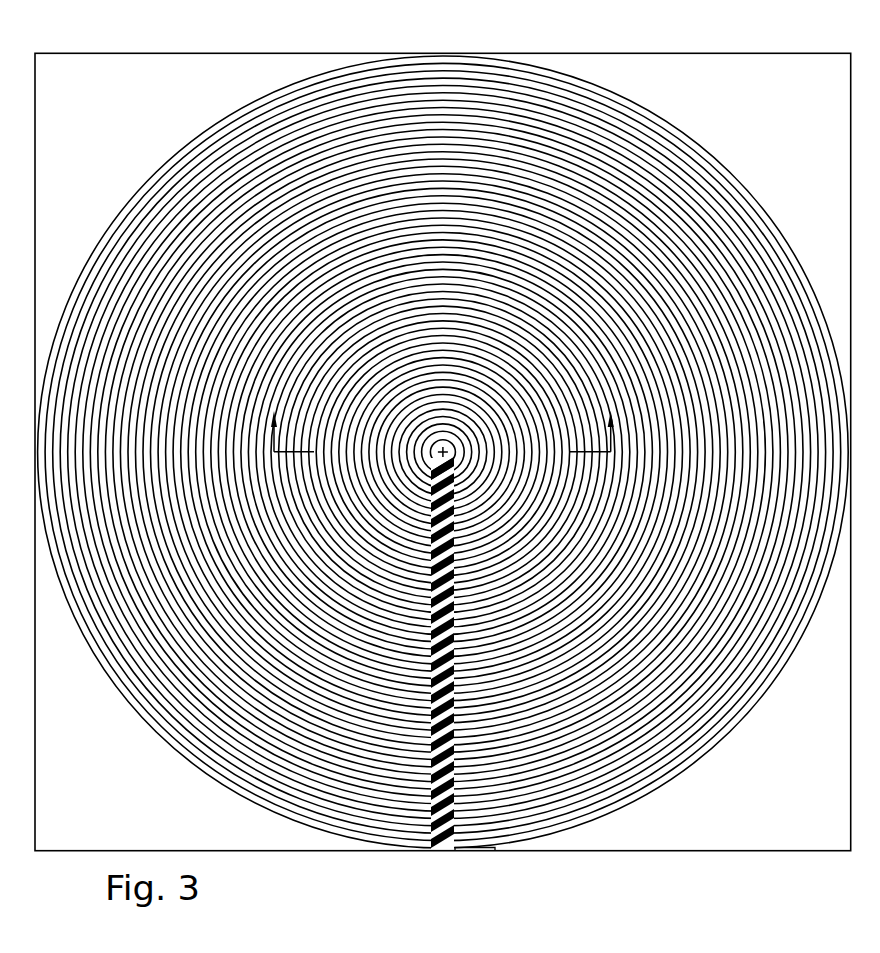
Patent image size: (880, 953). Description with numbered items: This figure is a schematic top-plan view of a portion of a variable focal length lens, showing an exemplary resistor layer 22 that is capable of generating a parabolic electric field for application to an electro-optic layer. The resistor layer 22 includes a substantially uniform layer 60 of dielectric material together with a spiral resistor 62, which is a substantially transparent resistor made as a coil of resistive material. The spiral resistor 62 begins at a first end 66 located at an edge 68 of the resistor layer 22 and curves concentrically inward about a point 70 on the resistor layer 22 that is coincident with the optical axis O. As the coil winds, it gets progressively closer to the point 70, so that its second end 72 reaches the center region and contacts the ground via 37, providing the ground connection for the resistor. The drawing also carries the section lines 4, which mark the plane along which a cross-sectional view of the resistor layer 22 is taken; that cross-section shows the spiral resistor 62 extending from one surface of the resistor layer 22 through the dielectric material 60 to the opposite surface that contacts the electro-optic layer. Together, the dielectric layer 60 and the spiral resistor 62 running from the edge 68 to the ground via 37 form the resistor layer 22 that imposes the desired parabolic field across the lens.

The resistor layer 22 is at (484, 36).
The layer of dielectric material 60 is at (628, 56).
The spiral resistor 62 is at (667, 99).
The point 70 is at (453, 442).
The ground via 37 is at (452, 462).
The lines 4- 4 is at (443, 420).
The first end 66 is at (455, 851).
The second end 72 is at (433, 468).
The edge 68 is at (495, 851).